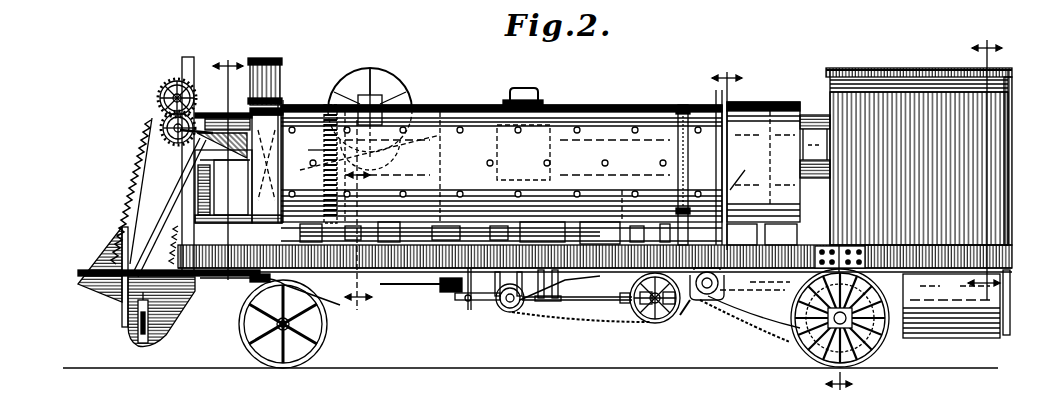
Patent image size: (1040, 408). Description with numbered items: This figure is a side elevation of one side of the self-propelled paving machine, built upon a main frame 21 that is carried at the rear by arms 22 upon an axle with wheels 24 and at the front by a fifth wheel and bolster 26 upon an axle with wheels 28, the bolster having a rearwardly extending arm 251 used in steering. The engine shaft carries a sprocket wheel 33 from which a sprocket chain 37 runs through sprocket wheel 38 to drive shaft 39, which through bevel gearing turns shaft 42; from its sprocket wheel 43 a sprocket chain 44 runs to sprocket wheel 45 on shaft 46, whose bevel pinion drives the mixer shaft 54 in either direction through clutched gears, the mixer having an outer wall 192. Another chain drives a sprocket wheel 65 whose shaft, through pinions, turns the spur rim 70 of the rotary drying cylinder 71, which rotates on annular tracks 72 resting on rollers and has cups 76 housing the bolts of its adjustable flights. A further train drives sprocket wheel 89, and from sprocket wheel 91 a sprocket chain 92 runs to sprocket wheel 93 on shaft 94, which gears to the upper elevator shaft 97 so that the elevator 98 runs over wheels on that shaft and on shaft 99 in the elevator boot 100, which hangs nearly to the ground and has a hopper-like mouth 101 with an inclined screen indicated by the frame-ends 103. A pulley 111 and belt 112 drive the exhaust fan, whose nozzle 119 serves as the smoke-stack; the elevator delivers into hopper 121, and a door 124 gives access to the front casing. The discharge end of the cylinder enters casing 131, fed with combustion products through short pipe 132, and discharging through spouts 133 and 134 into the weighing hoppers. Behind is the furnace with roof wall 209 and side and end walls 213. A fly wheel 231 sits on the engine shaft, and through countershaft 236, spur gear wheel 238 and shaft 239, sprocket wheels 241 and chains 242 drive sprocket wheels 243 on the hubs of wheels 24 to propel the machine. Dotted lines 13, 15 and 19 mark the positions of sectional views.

The section line 13— 13 is at (782, 229).
The section line 15— 15 is at (358, 216).
The section line 19 is at (228, 162).
The main frame 21 is at (282, 240).
The arms 22 is at (985, 168).
The wheels 24 is at (886, 338).
The bolster 26 is at (242, 324).
The wheels 28 is at (323, 334).
The sprocket wheel 33 is at (478, 222).
The sprocket chain 37 is at (466, 285).
The sprocket wheel 38 is at (470, 302).
The shaft 39 is at (458, 305).
The shaft 42 is at (504, 312).
The sprocket wheel 43 is at (527, 316).
The sprocket chain 44 is at (575, 321).
The sprocket wheel 45 is at (640, 318).
The shaft 46 is at (670, 312).
The mixer shaft 54 is at (592, 299).
The sprocket wheel 65 is at (368, 232).
The spur rim 70 is at (307, 147).
The rotary drying cylinder 71 is at (632, 115).
The annular tracks 72 is at (683, 105).
The cup 76 is at (660, 163).
The sprocket wheel 89 is at (372, 100).
The sprocket wheel 91 is at (386, 92).
The sprocket chain 92 is at (240, 120).
The sprocket wheel 93 is at (178, 140).
The shaft 94 is at (170, 133).
The upper elevator shaft 97 is at (172, 96).
The elevator 98 is at (140, 167).
The shaft 99 is at (135, 328).
The elevator boot 100 is at (173, 301).
The hopper-like mouth 101 is at (108, 243).
The screen-supporting frame-ends 103 is at (98, 272).
The pulley 111 is at (372, 78).
The belt 112 is at (326, 105).
The nozzle 119 is at (283, 100).
The hopper 121 is at (213, 128).
The door 124 is at (239, 161).
The inclosing casing 131 is at (757, 104).
The short pipe 132 is at (812, 115).
The discharge spout 133 is at (742, 234).
The discharge spout 134 is at (780, 230).
The outer wall 192 is at (975, 330).
The roof wall 209 is at (919, 156).
The side and end walls 213 is at (911, 76).
The fly wheel 231 is at (485, 233).
The countershaft 236 is at (722, 220).
The spur gear wheel 238 is at (710, 300).
The shaft 239 is at (688, 320).
The sprocket wheels 241 is at (755, 285).
The sprocket chains 242 is at (747, 328).
The sprocket wheels 243 is at (780, 340).
The rearwardly extending arm 251 is at (330, 300).